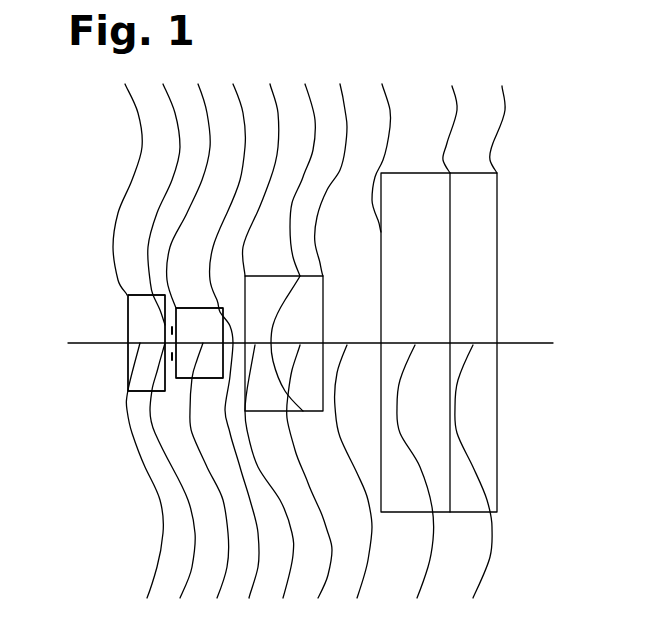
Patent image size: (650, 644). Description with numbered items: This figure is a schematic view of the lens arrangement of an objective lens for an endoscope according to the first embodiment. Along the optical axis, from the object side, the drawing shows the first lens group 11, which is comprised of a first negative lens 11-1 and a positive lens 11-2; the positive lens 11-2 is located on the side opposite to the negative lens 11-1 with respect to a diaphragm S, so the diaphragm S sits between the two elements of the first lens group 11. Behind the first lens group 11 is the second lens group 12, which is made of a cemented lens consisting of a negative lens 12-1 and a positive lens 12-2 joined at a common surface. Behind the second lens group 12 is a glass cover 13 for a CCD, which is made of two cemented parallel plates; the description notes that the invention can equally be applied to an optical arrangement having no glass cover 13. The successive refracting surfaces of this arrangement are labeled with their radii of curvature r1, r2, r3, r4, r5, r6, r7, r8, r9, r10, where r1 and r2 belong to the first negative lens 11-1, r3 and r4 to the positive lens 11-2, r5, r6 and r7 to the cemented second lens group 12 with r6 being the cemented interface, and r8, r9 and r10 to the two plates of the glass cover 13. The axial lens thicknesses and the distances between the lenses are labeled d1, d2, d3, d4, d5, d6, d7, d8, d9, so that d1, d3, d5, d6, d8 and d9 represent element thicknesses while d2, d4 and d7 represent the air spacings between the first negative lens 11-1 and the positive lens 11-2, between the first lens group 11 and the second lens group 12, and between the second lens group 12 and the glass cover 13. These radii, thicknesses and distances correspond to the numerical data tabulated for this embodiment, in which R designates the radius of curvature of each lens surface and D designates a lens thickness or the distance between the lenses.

The first lens group 11 is at (122, 398).
The first negative lens 11-1 is at (138, 327).
The positive lens 11-2 is at (210, 370).
The diaphragm S is at (173, 332).
The second lens group 12 is at (313, 415).
The negative lens 12-1 is at (260, 293).
The positive lens 12-2 is at (308, 308).
The glass cover 13 is at (420, 287).
The radius of curvature of first lens surface r1 is at (136, 334).
The radius of curvature of second lens surface r2 is at (170, 334).
The radius of curvature of third lens surface r3 is at (198, 334).
The radius of curvature of fourth lens surface r4 is at (235, 334).
The radius of curvature of fifth lens surface r5 is at (267, 334).
The radius of curvature of sixth lens surface r6 is at (308, 334).
The radius of curvature of seventh lens surface r7 is at (343, 334).
The radius of curvature of eighth surface r8 is at (398, 334).
The radius of curvature of ninth surface r9 is at (462, 334).
The radius of curvature of tenth surface r10 is at (491, 121).
The first lens thickness d1 is at (139, 610).
The first air distance d2 is at (174, 610).
The second lens thickness d3 is at (209, 610).
The second air distance d4 is at (244, 610).
The third lens thickness d5 is at (279, 610).
The fourth lens thickness d6 is at (314, 610).
The third air distance d7 is at (349, 610).
The first cover plate thickness d8 is at (410, 610).
The second cover plate thickness d9 is at (467, 610).